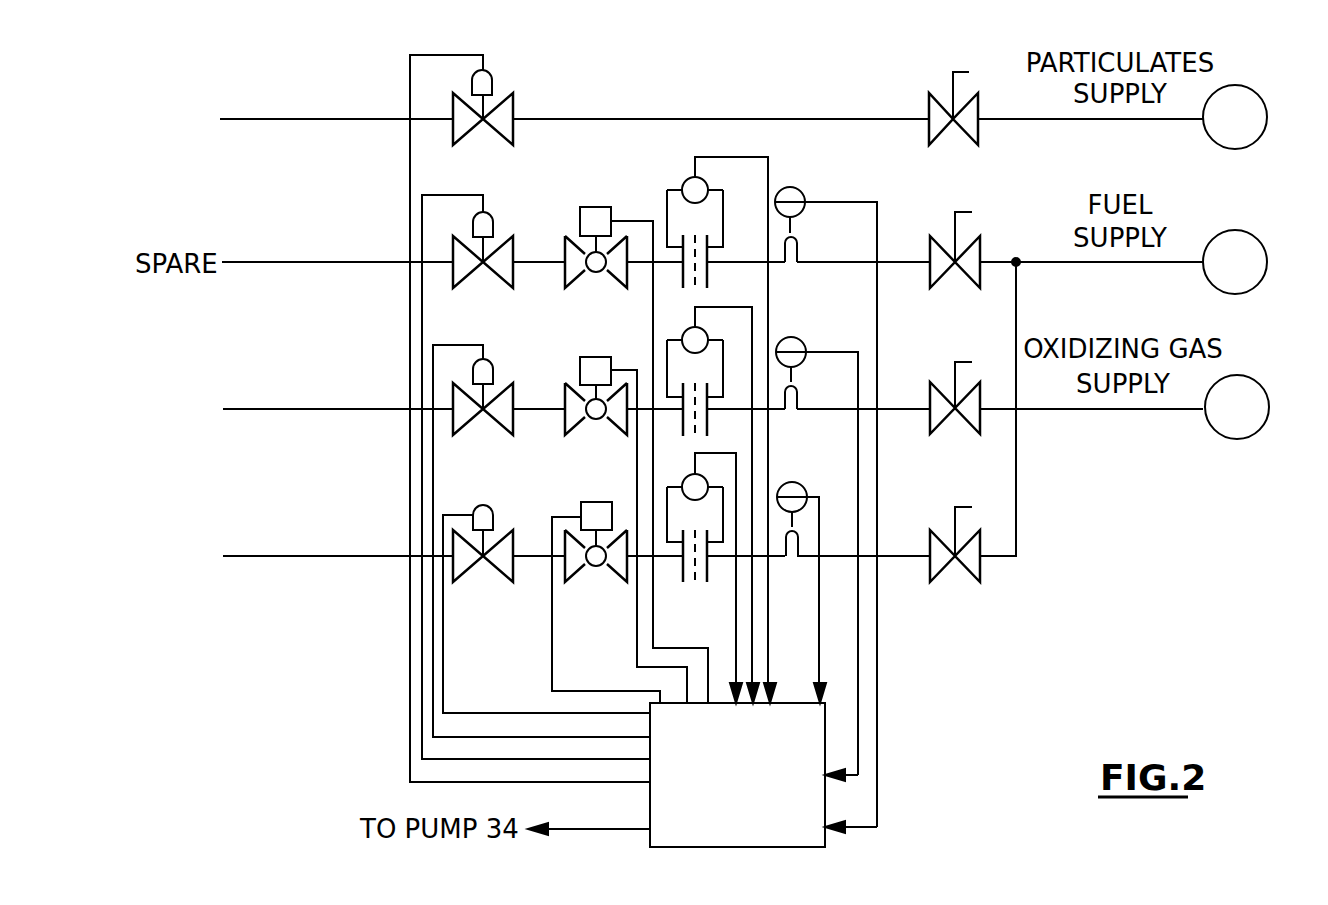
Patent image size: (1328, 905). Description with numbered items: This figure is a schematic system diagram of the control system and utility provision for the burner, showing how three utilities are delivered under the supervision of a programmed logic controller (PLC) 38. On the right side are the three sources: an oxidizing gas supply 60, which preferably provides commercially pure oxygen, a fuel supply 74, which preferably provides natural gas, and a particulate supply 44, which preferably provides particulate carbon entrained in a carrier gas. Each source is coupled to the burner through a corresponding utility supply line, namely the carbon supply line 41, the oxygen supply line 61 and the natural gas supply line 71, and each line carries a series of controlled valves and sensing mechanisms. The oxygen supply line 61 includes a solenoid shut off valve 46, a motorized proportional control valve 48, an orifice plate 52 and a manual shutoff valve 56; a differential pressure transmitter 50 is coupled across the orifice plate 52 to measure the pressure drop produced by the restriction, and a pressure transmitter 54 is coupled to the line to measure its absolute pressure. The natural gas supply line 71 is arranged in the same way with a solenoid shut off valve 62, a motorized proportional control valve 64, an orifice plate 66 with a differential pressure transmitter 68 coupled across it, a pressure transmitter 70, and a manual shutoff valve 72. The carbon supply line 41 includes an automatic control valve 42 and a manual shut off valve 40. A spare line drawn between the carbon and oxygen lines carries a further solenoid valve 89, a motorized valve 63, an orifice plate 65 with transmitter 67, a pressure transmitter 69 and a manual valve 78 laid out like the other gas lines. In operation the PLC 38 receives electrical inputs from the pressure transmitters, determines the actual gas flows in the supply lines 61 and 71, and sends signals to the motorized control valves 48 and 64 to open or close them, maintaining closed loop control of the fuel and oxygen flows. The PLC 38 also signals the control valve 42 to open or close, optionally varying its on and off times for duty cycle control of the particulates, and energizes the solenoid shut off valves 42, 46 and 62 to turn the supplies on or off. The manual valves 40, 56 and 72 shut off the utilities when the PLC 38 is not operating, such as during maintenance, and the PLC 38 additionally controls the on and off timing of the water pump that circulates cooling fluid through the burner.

The programmed logic controller (PLC) 38 is at (774, 848).
The manual shut off valve 40 is at (930, 108).
The carbon supply line 41 is at (258, 121).
The automatic control valve 42 is at (494, 80).
The particulate supply 44 is at (1262, 98).
The solenoid shut off valve 46 is at (494, 369).
The motorized proportional control valve 48 is at (580, 357).
The differential pressure transmitter 50 is at (685, 334).
The orifice plate 52 is at (710, 428).
The pressure transmitter 54 is at (786, 338).
The manual shutoff valve 56 is at (948, 424).
The oxidizing gas supply 60 is at (1264, 393).
The oxygen supply line 61 is at (232, 409).
The solenoid shut off valve 62 is at (494, 512).
The spare line motor-operated control valve 63 is at (596, 207).
The motorized proportional control valve 64 is at (590, 502).
The spare line flow meter orifice 65 is at (708, 284).
The orifice plate 66 is at (683, 582).
The spare line flow meter transmitter 67 is at (706, 181).
The differential pressure transmitter 68 is at (686, 480).
The spare line pressure gauge 69 is at (798, 216).
The pressure transmitter 70 is at (803, 485).
The natural gas supply line 71 is at (248, 558).
The manual shutoff valve 72 is at (948, 570).
The fuel supply 74 is at (1262, 243).
The fuel supply manual valve 78 is at (945, 276).
The spare line solenoid shutoff valve 89 is at (494, 222).